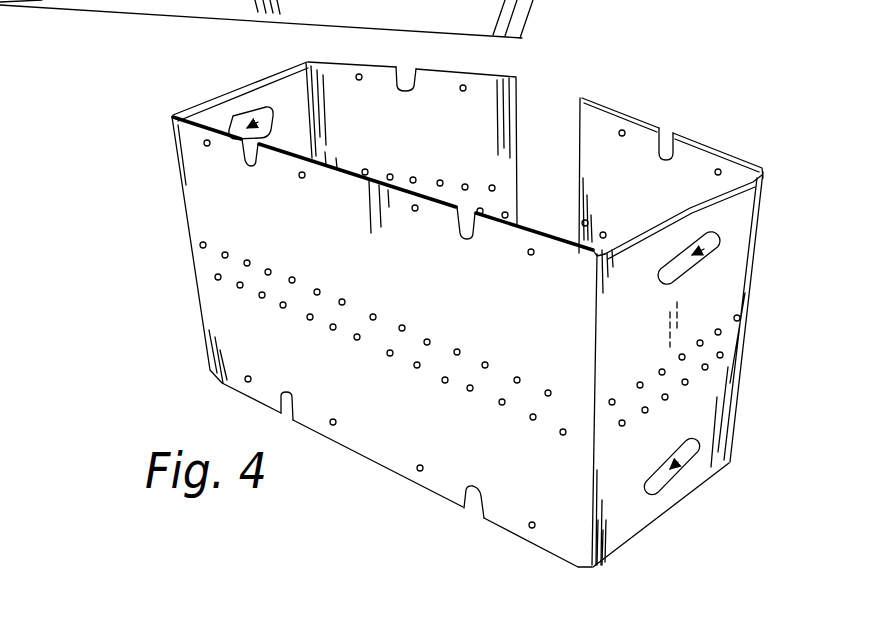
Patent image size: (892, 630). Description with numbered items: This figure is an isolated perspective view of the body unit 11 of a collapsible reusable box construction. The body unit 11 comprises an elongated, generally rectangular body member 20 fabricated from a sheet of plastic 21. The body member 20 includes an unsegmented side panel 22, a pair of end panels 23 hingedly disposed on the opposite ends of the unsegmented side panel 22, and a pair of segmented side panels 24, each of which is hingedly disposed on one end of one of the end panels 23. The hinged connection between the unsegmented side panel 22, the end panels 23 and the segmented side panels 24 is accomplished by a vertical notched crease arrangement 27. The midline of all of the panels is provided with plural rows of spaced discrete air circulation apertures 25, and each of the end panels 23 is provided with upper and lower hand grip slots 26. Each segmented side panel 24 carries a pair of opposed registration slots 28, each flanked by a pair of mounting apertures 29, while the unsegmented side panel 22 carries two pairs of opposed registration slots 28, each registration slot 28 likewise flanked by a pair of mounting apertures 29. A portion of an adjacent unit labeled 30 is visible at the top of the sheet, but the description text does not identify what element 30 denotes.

The body unit 11 is at (133, 238).
The body member 20 is at (633, 83).
The sheet of plastic 21 is at (488, 326).
The unsegmented side panel 22 is at (361, 254).
The end panels 23 is at (212, 93).
The segmented side panels 24 is at (585, 153).
The air circulation apertures 25 is at (604, 392).
The hand grip slots 26 is at (277, 98).
The vertical notched crease arrangement 27 is at (318, 113).
The registration slots 28 is at (245, 164).
The mounting apertures 29 is at (361, 77).
The lid 30 is at (105, 4).